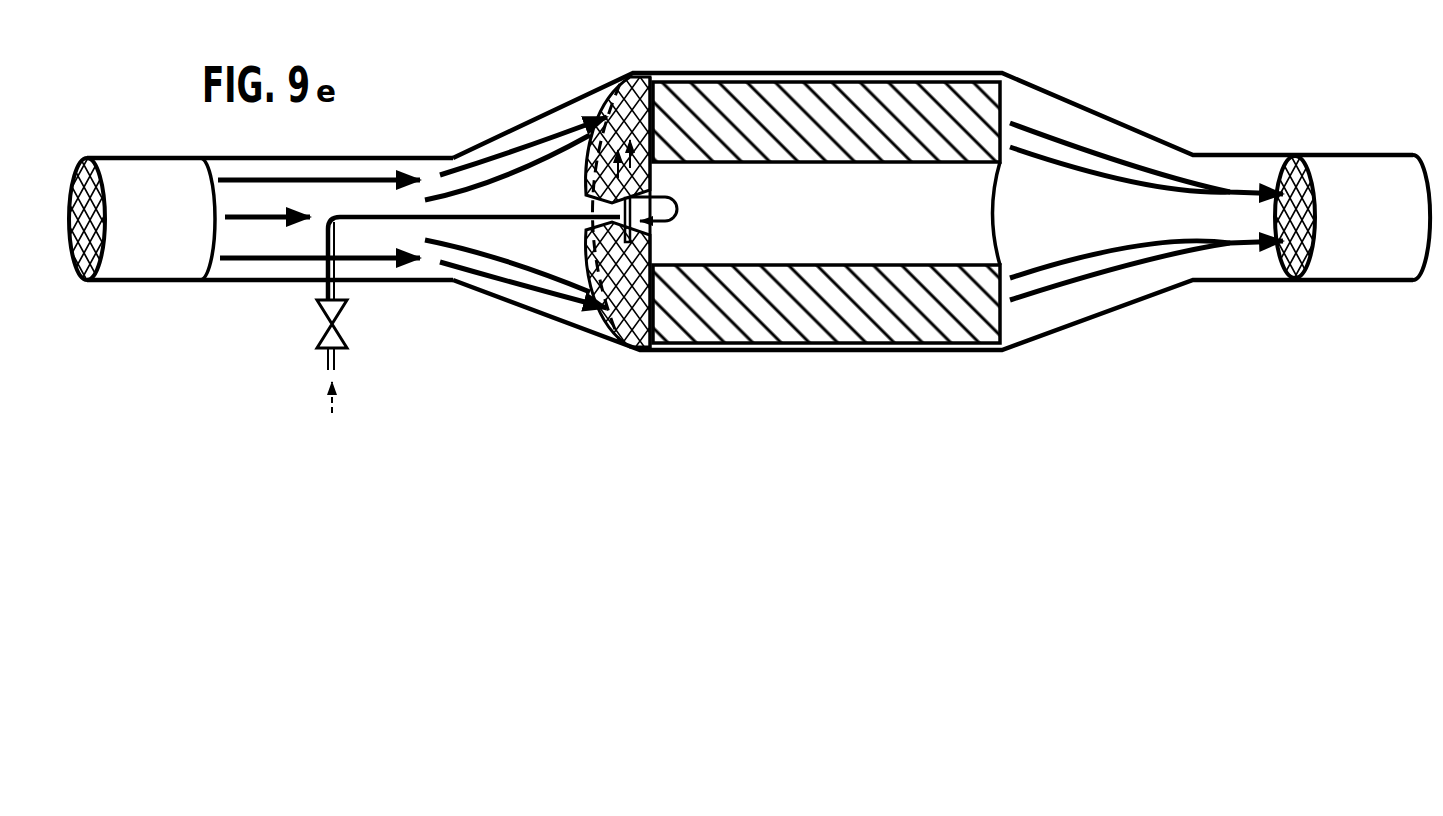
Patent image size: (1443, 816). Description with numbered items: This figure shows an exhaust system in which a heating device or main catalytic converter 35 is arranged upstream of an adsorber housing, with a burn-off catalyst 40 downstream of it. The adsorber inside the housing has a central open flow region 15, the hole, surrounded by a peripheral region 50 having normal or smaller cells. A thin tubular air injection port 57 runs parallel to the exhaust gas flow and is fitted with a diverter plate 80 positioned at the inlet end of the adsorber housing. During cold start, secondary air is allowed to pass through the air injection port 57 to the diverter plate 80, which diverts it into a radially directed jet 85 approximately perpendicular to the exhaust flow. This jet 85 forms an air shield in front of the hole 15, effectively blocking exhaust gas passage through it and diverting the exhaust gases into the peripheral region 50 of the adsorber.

The heating device or main catalytic converter 35 is at (117, 170).
The burn-off catalyst 40 is at (1325, 165).
The open flow region 15 is at (963, 219).
The peripheral region having normal/smaller cells 50 is at (867, 146).
The diverter plate 80 is at (600, 206).
The air injection port 57 is at (559, 226).
The radially directed jet 85 is at (690, 211).